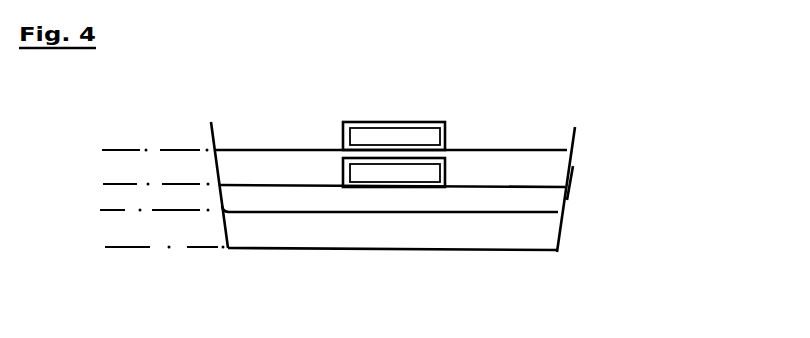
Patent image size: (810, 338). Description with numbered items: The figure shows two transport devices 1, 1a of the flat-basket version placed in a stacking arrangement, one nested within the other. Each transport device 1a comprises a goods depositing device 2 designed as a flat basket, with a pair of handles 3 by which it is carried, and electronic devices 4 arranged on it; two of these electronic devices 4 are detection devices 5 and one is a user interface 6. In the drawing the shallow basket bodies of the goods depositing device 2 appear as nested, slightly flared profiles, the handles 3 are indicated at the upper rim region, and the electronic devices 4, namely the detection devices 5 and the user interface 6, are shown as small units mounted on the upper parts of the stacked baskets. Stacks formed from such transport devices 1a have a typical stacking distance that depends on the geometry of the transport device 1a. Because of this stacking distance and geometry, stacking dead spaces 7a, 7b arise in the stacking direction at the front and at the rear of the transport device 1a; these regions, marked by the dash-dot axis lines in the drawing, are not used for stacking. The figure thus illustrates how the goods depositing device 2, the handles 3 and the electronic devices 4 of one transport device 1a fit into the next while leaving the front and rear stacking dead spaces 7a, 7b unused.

The transport device 1 is at (468, 187).
The transport device 1a is at (593, 230).
The goods depositing device 2 is at (290, 250).
The handle 3 is at (572, 175).
The electronic device 4 is at (390, 120).
The detection device 5 is at (221, 200).
The user interface 6 is at (393, 173).
The stacking dead space 7a is at (125, 158).
The stacking dead space 7b is at (110, 223).